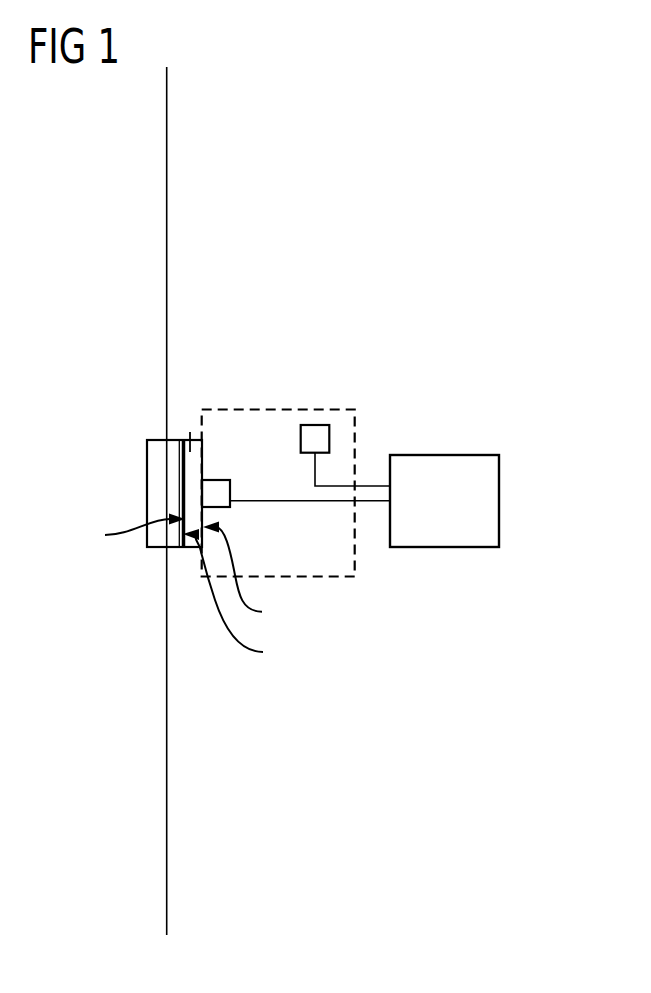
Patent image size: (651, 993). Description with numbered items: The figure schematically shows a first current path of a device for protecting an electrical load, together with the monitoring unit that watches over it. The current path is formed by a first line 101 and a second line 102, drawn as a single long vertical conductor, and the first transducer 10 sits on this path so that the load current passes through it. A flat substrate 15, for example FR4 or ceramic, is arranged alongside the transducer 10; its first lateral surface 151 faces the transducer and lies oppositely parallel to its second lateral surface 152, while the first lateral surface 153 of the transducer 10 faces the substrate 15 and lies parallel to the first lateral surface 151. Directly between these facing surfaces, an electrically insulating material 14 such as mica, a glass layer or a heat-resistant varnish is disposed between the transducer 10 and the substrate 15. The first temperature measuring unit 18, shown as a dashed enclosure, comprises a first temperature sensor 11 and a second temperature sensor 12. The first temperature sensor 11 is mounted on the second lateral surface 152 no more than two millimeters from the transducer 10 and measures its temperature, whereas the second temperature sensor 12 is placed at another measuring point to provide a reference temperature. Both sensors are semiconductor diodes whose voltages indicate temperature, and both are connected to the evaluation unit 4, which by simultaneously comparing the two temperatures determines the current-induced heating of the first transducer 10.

The first line 101 is at (167, 208).
The second line 102 is at (167, 772).
The first transducer 10 is at (155, 497).
The electrically insulating material 14 is at (183, 440).
The substrate 15 is at (190, 450).
The first temperature sensor 11 is at (218, 492).
The first temperature measuring unit 18 is at (313, 409).
The second temperature sensor 12 is at (329, 440).
The evaluation unit 4 is at (435, 547).
The first lateral surface of the substrate 151 is at (121, 535).
The second lateral surface of the substrate 152 is at (256, 578).
The first lateral surface of the transducer 153 is at (246, 600).